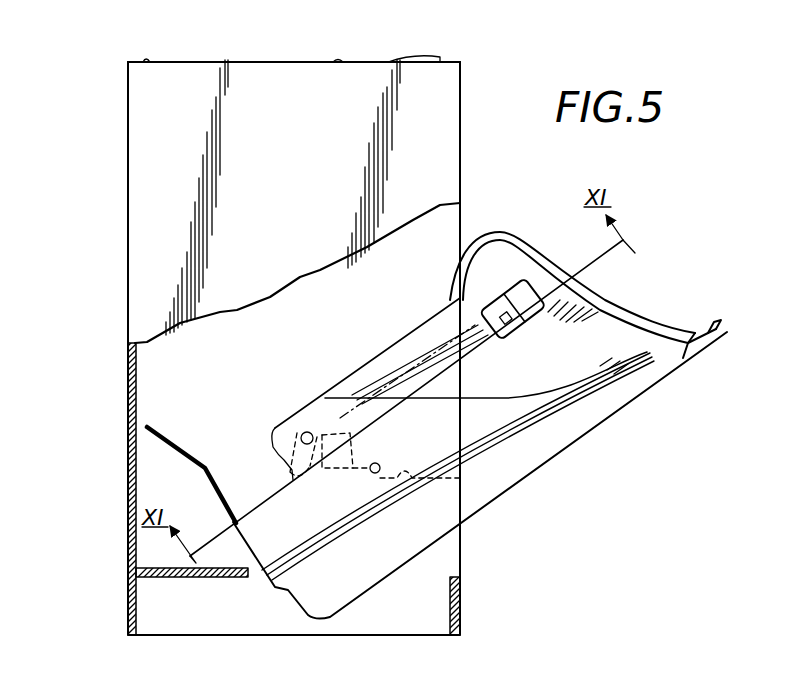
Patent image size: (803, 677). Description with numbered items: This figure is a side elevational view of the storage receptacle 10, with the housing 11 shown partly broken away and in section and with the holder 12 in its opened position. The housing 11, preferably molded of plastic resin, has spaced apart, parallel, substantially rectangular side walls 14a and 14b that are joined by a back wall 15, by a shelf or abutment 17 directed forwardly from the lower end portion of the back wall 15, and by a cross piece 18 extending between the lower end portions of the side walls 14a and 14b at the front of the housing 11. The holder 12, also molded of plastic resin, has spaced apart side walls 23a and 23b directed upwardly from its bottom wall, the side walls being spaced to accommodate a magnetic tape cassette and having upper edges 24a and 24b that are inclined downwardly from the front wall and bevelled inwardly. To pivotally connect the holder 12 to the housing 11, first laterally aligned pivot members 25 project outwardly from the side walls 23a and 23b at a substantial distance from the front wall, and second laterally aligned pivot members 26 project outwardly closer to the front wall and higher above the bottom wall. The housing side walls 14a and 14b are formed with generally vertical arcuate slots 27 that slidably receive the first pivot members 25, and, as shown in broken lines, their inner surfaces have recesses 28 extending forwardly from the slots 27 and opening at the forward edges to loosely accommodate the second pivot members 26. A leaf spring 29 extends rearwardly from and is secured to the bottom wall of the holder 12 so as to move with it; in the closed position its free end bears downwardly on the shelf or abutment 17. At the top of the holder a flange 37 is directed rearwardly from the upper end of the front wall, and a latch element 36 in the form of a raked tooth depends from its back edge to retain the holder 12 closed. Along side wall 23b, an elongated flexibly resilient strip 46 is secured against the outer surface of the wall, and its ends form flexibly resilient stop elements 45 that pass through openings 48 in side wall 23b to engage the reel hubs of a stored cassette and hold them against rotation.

The storage receptacle 10 is at (492, 70).
The housing 11 is at (125, 196).
The holder 12 is at (548, 470).
The side wall 14a is at (273, 72).
The side wall 14b is at (148, 350).
The back wall 15 is at (126, 410).
The shelf or abutment 17 is at (184, 578).
The cross piece 18 is at (462, 592).
The side wall 23a is at (573, 428).
The side wall 23b is at (620, 322).
The upper edge 24a is at (487, 397).
The upper edge 24b is at (517, 243).
The first pivot member 25 is at (305, 432).
The second pivot member 26 is at (372, 477).
The arcuate slot 27 is at (293, 486).
The recess 28 is at (410, 482).
The leaf spring 29 is at (213, 483).
The latch element 36 is at (708, 322).
The flange 37 is at (722, 320).
The stop element 45 is at (527, 278).
The strip 46 is at (512, 338).
The opening 48 is at (540, 292).